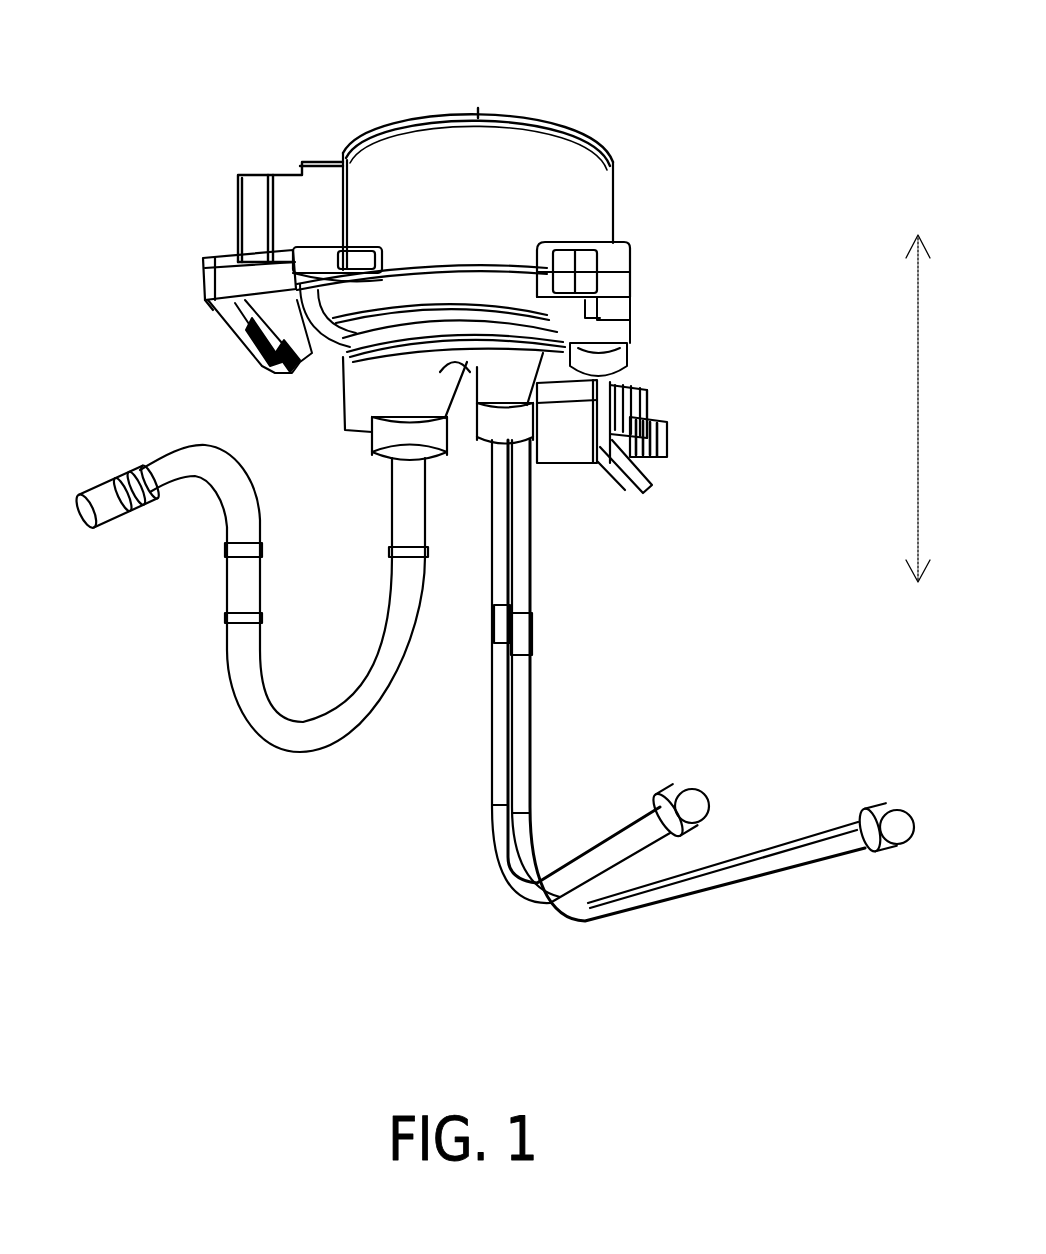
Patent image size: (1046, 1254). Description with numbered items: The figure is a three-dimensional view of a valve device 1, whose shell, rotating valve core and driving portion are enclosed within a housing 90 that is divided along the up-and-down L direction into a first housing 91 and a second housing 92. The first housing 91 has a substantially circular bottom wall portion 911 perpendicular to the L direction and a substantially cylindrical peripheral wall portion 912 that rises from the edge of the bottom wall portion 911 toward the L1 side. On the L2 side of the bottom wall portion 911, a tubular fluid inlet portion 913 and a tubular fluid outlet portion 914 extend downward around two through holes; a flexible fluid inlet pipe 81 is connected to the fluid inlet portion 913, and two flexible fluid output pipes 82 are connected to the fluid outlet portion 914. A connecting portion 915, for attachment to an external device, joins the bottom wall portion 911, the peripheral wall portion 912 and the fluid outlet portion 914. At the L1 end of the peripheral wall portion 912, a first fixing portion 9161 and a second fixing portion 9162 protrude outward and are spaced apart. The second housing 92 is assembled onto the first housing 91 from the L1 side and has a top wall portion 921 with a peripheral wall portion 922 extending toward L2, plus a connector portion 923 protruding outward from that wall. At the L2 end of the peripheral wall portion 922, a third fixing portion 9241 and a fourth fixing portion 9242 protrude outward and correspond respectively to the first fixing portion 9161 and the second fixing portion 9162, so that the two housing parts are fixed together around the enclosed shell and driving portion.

The valve device 1 is at (85, 993).
The housing 90 is at (427, 113).
The top wall portion 921 is at (567, 130).
The peripheral wall portion 922 is at (548, 202).
The second housing 92 is at (290, 168).
The third fixing portion 9241 is at (320, 257).
The fourth fixing portion 9242 is at (623, 258).
The connector portion 923 is at (233, 282).
The first fixing portion 9161 is at (322, 301).
The second fixing portion 9162 is at (607, 287).
The peripheral wall portion 912 is at (505, 295).
The bottom wall portion 911 is at (438, 330).
The fluid inlet portion 913 is at (388, 400).
The fluid outlet portion 914 is at (502, 377).
The first housing 91 is at (570, 417).
The connecting portion 915 is at (642, 481).
The fluid inlet pipe 81 is at (242, 690).
The fluid output pipes 82 is at (530, 707).